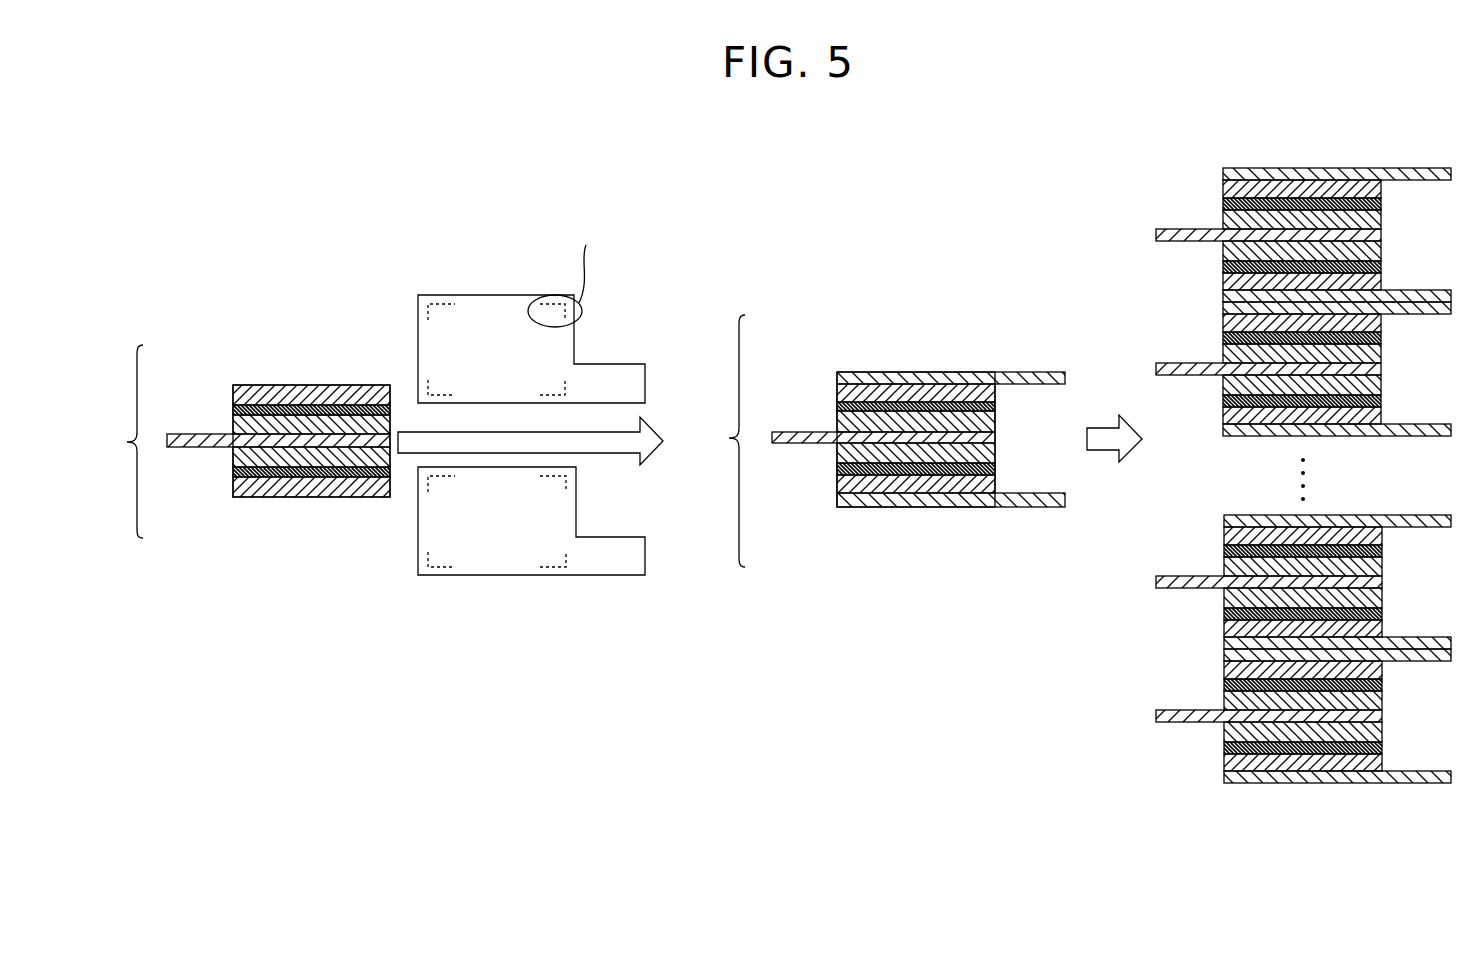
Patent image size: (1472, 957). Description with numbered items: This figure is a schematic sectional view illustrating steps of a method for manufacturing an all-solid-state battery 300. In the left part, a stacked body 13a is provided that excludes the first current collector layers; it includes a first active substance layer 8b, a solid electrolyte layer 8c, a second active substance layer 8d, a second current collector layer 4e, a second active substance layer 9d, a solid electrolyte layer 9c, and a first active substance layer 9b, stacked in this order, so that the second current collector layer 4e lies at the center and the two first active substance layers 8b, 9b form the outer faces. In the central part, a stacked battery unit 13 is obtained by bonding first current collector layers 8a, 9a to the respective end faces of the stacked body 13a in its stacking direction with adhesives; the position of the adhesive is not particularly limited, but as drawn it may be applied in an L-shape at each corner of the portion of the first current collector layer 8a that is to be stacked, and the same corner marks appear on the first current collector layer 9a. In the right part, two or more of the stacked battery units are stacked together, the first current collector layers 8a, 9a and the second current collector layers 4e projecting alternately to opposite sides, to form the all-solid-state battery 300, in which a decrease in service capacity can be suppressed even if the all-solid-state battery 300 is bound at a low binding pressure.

The stacked body 13a is at (235, 441).
The stacked battery unit 13 is at (846, 441).
The all-solid-state battery 300 is at (1197, 165).
The first current collector layer 8a is at (492, 302).
The first active substance layer 8b is at (233, 392).
The solid electrolyte layer 8c is at (233, 410).
The second active substance layer 8d is at (233, 425).
The second current collector layer 4e is at (168, 437).
The first current collector layer 9a is at (504, 565).
The first active substance layer 9b is at (233, 487).
The solid electrolyte layer 9c is at (233, 472).
The second active substance layer 9d is at (233, 455).